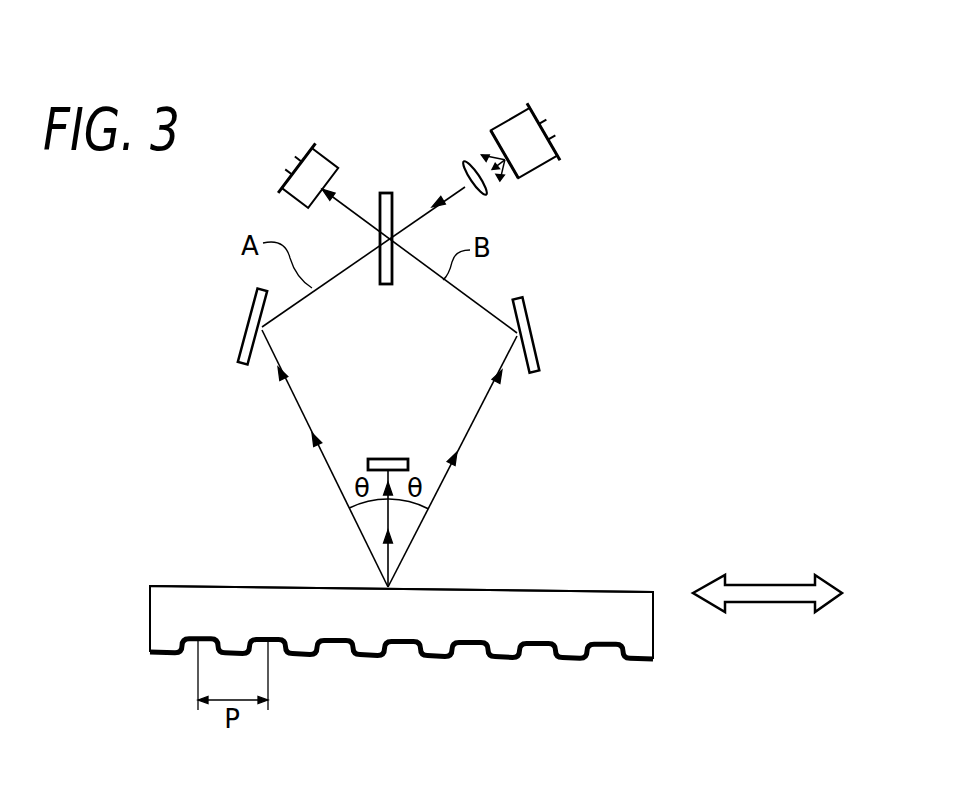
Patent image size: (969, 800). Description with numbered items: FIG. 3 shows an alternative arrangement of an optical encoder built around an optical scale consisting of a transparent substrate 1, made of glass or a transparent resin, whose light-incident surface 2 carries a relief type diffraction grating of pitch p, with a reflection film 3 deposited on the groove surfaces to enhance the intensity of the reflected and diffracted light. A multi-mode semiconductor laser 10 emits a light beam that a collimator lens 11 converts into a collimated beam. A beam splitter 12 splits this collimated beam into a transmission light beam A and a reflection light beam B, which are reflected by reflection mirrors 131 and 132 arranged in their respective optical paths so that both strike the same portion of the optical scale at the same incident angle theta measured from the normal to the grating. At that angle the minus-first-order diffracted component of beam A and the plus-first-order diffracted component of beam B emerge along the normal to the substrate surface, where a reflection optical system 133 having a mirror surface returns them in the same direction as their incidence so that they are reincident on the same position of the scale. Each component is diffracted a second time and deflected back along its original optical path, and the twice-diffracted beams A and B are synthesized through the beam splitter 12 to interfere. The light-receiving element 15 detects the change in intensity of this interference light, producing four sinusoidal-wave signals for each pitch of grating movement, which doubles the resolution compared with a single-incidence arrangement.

The transparent substrate 1 is at (162, 600).
The light-incident surface 2 is at (583, 592).
The reflection film 3 is at (170, 655).
The multi-mode semiconductor laser 10 is at (543, 157).
The collimator lens 11 is at (488, 193).
The beam splitter 12 is at (388, 193).
The light-receiving element 15 is at (318, 158).
The reflection mirror 131 is at (242, 357).
The reflection mirror 132 is at (540, 353).
The reflection optical system 133 is at (385, 459).